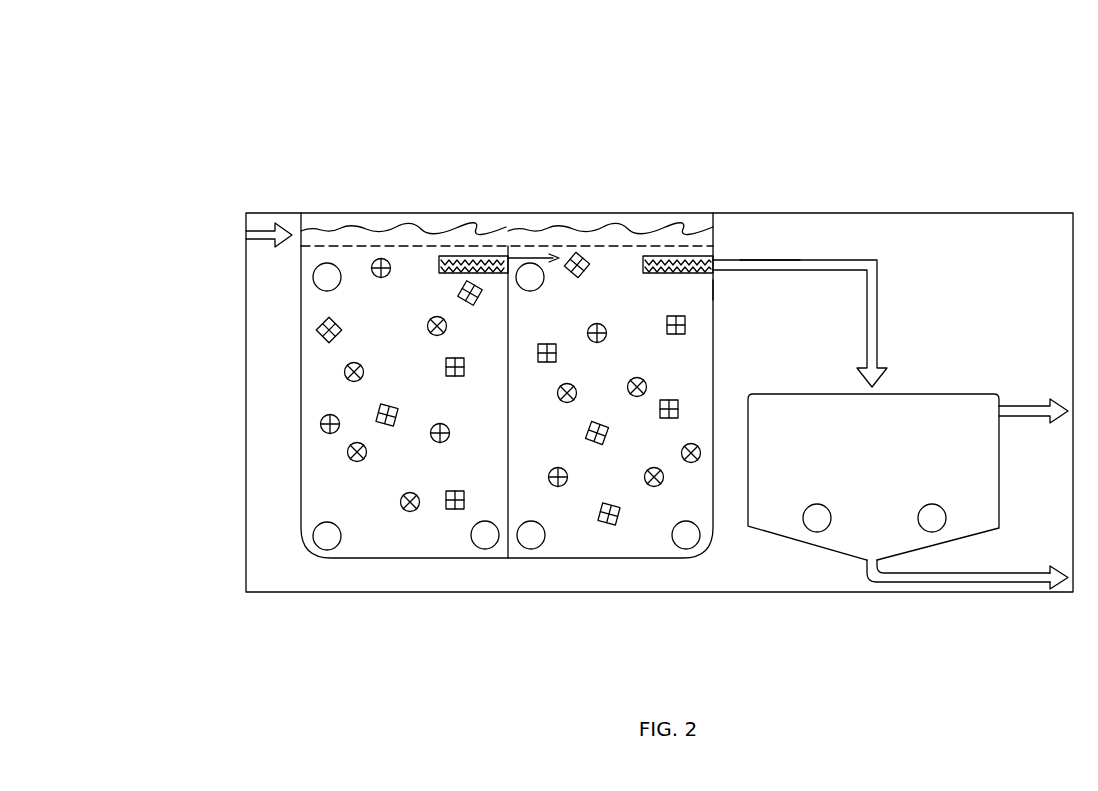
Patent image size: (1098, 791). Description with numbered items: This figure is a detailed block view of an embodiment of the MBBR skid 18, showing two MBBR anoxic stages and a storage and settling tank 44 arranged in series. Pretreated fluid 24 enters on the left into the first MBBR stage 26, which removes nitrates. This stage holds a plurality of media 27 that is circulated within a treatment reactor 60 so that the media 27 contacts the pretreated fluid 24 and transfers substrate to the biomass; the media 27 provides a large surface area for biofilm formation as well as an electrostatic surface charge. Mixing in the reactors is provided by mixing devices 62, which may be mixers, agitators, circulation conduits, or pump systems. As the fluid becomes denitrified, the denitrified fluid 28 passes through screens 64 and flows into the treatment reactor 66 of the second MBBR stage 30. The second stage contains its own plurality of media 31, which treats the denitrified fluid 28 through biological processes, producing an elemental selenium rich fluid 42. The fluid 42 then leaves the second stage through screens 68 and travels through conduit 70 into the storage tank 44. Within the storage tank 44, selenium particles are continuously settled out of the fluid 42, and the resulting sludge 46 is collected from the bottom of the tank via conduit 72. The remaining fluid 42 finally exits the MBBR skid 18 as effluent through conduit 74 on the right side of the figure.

The MBBR skid 18 is at (800, 95).
The pretreated fluid 24 is at (259, 213).
The first MBBR stage 26 is at (389, 311).
The media 27 is at (344, 370).
The denitrified fluid 28 is at (524, 250).
The second MBBR stage 30 is at (592, 308).
The media 31 is at (635, 378).
The elemental selenium rich fluid 42 is at (763, 261).
The storage and settling tank 44 is at (862, 463).
The sludge 46 is at (976, 575).
The treatment reactor 60 is at (301, 457).
The mixing devices 62 is at (331, 263).
The screens 64 is at (478, 256).
The treatment reactor 66 is at (713, 299).
The screens 68 is at (683, 256).
The conduit 70 is at (797, 262).
The conduit 72 is at (1020, 592).
The conduit 74 is at (1026, 406).